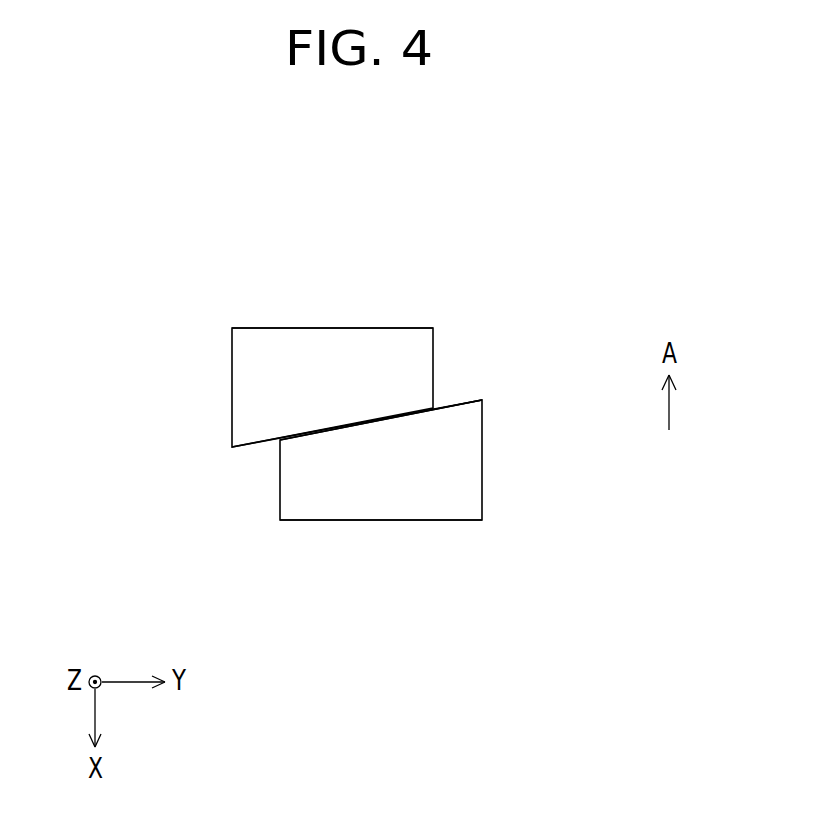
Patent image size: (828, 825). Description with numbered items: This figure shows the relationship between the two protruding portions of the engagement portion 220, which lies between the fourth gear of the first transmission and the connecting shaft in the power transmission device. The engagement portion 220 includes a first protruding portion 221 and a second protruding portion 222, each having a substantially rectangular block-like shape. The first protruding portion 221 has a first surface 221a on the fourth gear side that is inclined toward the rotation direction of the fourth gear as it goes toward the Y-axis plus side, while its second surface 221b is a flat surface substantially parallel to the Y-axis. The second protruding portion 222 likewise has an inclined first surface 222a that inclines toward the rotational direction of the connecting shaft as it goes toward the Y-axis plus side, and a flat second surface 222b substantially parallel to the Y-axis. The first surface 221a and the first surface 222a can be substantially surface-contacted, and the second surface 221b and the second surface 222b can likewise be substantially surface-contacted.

The engagement portion 220 is at (620, 292).
The first protruding portion 221 is at (498, 512).
The first surface of the first protruding portion 221a is at (467, 400).
The second surface of the first protruding portion 221b is at (433, 522).
The second protruding portion 222 is at (213, 365).
The first surface of the second protruding portion 222a is at (250, 448).
The second surface of the second protruding portion 222b is at (405, 327).